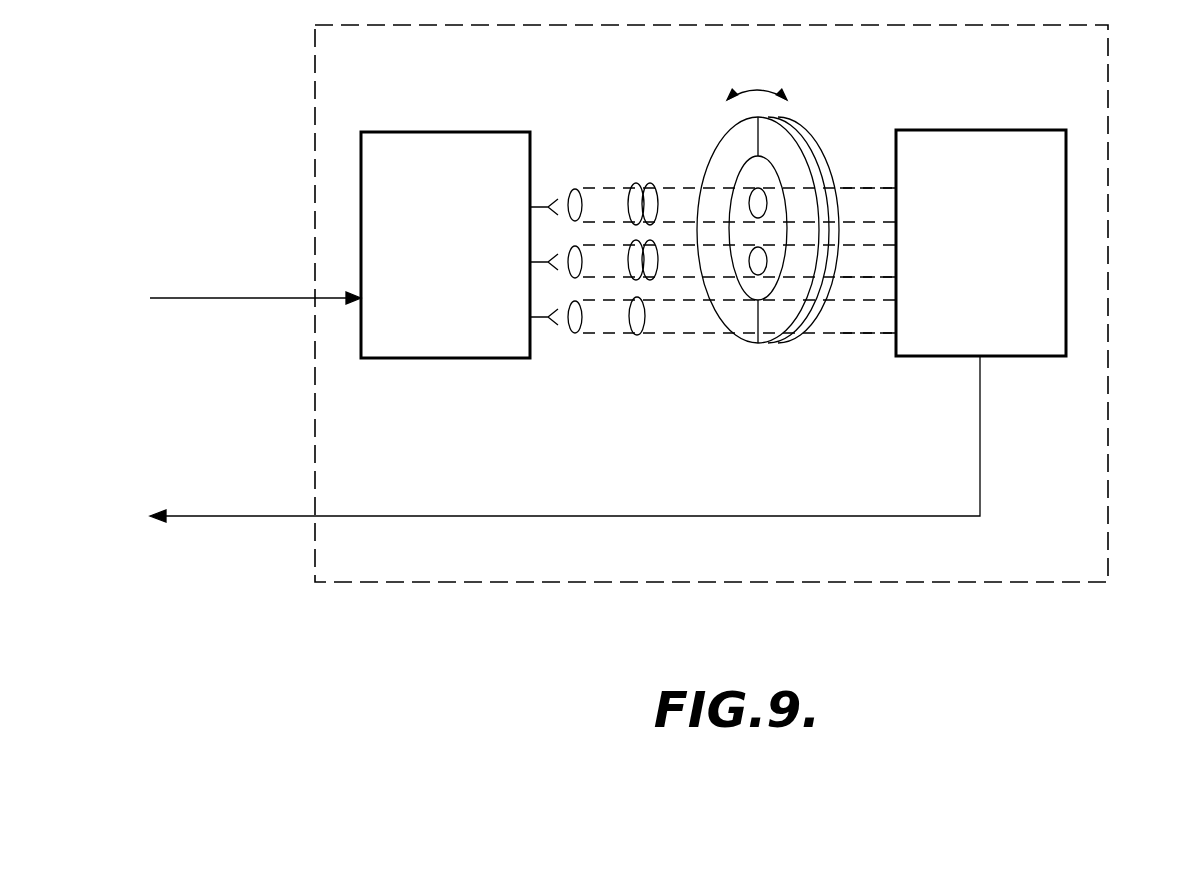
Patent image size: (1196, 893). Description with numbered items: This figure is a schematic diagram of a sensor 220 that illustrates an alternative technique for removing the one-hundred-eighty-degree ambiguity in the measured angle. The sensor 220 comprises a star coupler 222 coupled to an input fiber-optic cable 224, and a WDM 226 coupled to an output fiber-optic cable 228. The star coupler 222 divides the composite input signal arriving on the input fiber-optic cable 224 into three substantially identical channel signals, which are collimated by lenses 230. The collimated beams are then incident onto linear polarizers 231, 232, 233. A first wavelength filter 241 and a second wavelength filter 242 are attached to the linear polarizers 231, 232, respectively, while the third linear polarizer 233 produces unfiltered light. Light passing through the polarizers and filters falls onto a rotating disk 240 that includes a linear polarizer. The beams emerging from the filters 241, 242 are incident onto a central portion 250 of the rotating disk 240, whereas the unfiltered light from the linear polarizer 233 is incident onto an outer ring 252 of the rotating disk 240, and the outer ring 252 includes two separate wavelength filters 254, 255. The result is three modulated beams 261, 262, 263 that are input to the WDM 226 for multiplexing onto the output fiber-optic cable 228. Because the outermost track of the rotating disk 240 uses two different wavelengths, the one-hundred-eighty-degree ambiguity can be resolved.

The sensor 220 is at (313, 118).
The star coupler 222 is at (437, 358).
The input fiber-optic cable 224 is at (228, 296).
The WDM 226 is at (1067, 242).
The output fiber-optic cable 228 is at (228, 514).
The lenses 230 is at (573, 184).
The linear polarizer 231 is at (633, 188).
The linear polarizer 232 is at (636, 268).
The linear polarizer 233 is at (637, 334).
The rotating disk 240 is at (822, 134).
The first wavelength filter 241 is at (651, 188).
The second wavelength filter 242 is at (654, 264).
The central portion 250 is at (757, 300).
The outer ring 252 is at (777, 318).
The wavelength filter 254 is at (742, 140).
The wavelength filter 255 is at (773, 140).
The modulated beam 261 is at (873, 200).
The modulated beam 262 is at (867, 263).
The modulated beam 263 is at (835, 323).